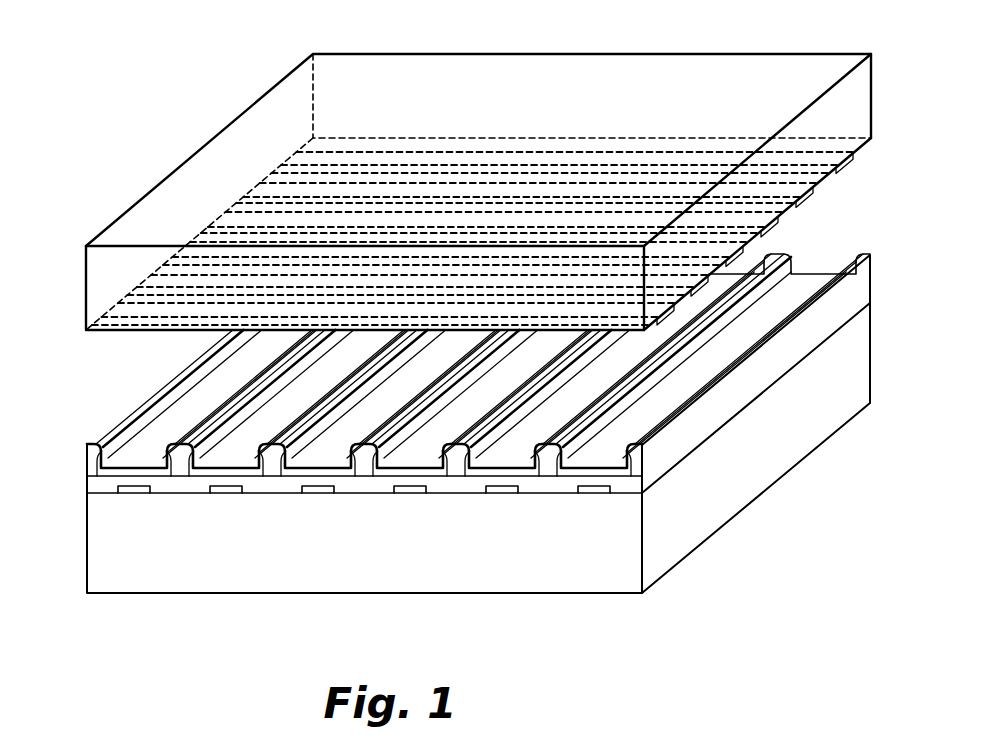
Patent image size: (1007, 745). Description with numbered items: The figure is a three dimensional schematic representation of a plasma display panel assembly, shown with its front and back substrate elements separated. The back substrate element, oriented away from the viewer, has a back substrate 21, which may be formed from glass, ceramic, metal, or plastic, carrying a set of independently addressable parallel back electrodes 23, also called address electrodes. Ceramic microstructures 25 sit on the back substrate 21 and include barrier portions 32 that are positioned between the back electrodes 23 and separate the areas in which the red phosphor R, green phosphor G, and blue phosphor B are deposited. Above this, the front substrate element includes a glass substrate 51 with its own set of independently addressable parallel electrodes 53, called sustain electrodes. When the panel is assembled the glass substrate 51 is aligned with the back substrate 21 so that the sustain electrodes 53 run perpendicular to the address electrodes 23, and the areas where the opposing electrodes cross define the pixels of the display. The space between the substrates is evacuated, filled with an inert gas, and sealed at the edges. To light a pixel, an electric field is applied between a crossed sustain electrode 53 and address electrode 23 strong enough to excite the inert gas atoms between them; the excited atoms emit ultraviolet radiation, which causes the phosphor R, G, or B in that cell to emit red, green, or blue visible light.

The glass substrate 51 is at (826, 72).
The sustain electrodes 53 is at (813, 201).
The back substrate 21 is at (653, 542).
The ceramic microstructures 25 is at (625, 482).
The address electrodes 23 is at (508, 493).
The barrier portions 32 is at (175, 458).
The red phosphor R is at (255, 468).
The green phosphor G is at (341, 468).
The blue phosphor B is at (428, 468).